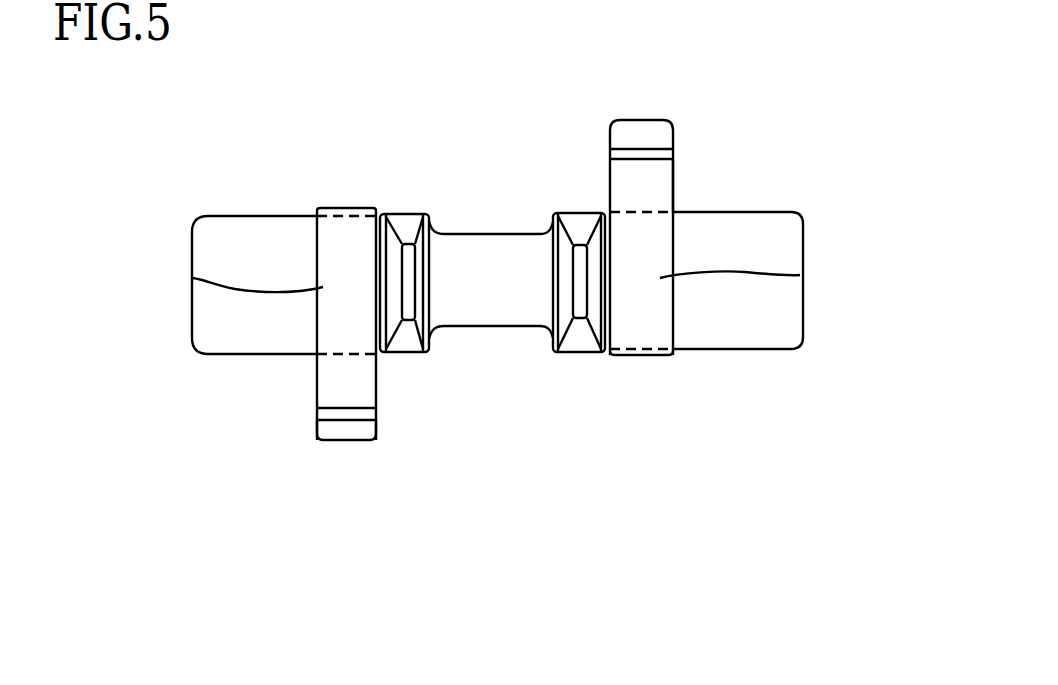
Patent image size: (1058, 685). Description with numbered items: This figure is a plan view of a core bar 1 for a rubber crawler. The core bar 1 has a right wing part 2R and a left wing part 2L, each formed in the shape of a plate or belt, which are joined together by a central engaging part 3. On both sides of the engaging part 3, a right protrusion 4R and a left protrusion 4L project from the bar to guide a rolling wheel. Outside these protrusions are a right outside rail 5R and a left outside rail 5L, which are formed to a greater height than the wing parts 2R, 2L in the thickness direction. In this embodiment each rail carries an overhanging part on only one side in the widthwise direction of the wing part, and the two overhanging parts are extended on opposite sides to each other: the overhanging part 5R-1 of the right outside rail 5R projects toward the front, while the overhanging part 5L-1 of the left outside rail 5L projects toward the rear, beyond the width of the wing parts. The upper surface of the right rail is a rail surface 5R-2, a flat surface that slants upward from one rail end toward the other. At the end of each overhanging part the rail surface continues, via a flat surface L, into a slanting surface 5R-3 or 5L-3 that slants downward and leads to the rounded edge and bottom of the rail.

The core bar 1 is at (754, 131).
The left wing part 2L is at (222, 340).
The right wing part 2R is at (755, 333).
The engaging part 3 is at (520, 312).
The left protrusion 4L is at (405, 218).
The right protrusion 4R is at (580, 220).
The left outside rail 5L is at (318, 251).
The overhanging part 5L-1 is at (193, 278).
The slanting surface 5L-3 is at (350, 435).
The right outside rail 5R is at (684, 243).
The overhanging part 5R-1 is at (675, 187).
The rail surface 5R-2 is at (800, 275).
The slanting surface 5R-3 is at (644, 122).
The flat surface L is at (315, 418).